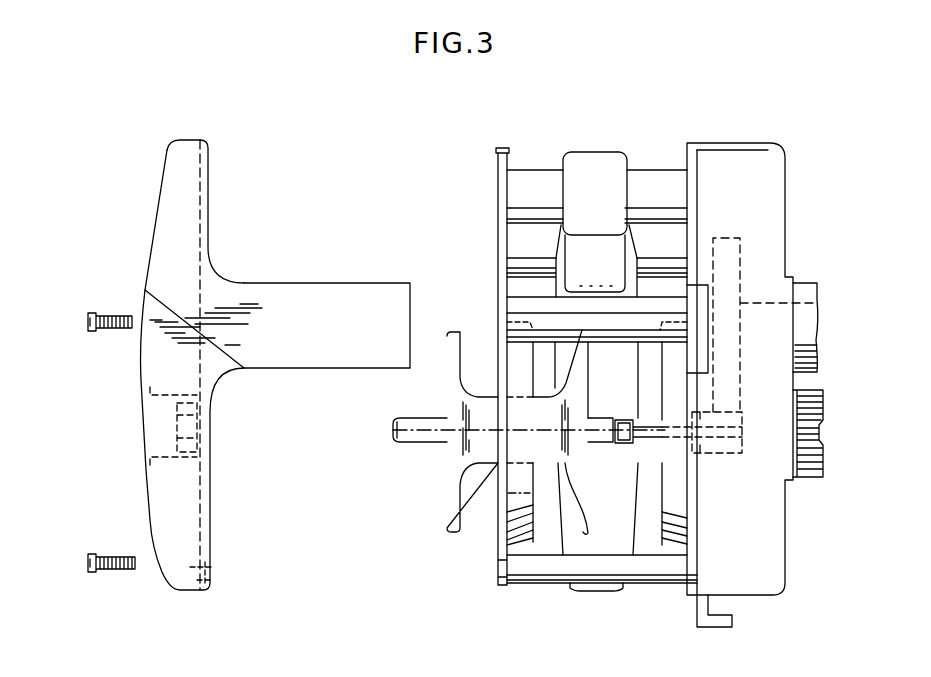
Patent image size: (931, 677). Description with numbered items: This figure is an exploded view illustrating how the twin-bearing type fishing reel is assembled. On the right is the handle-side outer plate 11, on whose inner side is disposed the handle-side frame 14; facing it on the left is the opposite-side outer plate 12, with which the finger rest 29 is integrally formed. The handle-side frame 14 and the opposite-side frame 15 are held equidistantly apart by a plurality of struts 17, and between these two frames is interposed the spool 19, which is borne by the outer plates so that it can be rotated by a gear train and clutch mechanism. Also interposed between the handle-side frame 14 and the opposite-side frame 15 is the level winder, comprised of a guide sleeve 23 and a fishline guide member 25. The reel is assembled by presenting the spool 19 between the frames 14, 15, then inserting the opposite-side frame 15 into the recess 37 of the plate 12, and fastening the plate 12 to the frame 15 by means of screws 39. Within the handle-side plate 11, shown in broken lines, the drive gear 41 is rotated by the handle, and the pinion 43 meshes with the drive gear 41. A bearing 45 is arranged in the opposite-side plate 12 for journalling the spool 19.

The handle-side outer plate 11 is at (735, 158).
The opposite-side outer plate 12 is at (192, 150).
The handle-side frame 14 is at (687, 157).
The opposite-side frame 15 is at (498, 160).
The struts 17 is at (543, 325).
The spool 19 is at (447, 467).
The guide sleeve 23 is at (533, 172).
The fishline guide member 25 is at (590, 162).
The finger rest 29 is at (333, 275).
The recess 37 is at (212, 570).
The screws 39 is at (112, 312).
The drive gear 41 is at (742, 258).
The pinion 43 is at (742, 452).
The bearing 45 is at (198, 406).